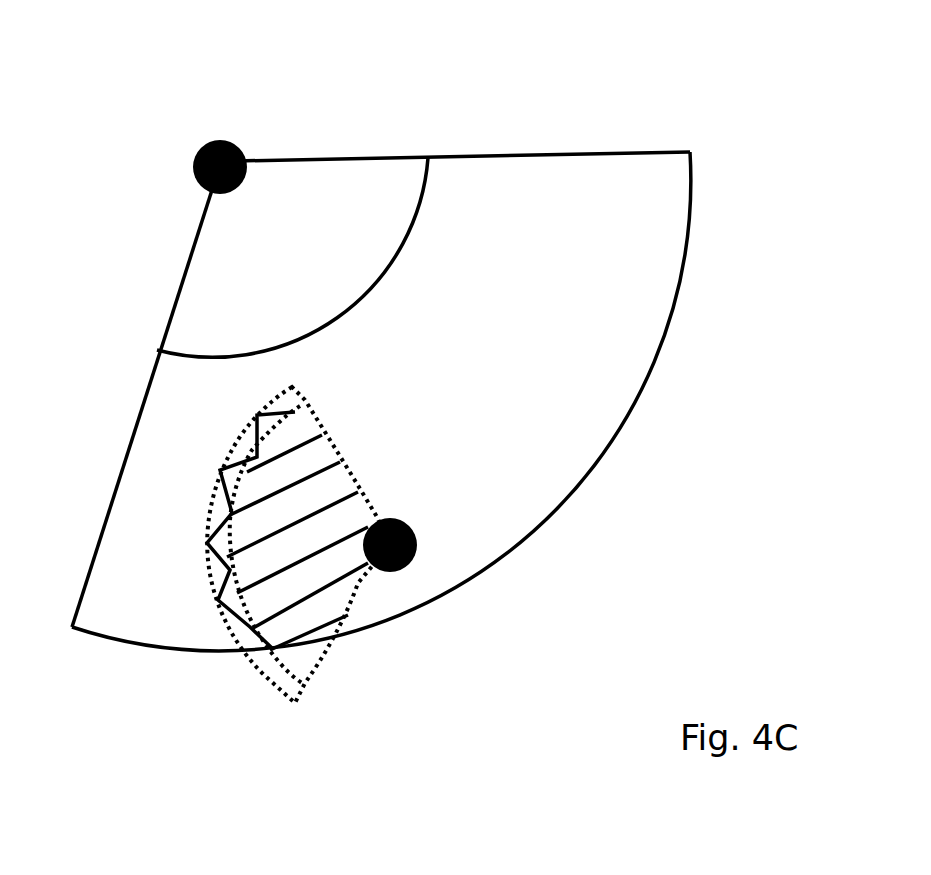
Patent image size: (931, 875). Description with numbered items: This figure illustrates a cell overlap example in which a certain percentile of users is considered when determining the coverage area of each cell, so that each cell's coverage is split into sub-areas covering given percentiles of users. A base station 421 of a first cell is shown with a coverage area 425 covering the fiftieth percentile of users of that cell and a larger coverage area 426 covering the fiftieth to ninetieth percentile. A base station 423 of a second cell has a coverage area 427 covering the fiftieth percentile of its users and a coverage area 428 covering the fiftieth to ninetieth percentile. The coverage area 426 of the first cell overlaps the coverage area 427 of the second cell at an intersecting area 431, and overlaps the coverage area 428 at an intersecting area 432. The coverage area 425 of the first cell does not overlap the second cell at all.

The base station 421 is at (205, 140).
The base station 423 is at (415, 558).
The coverage area 425 is at (346, 185).
The coverage area 426 is at (561, 193).
The coverage area 427 is at (331, 664).
The coverage area 428 is at (301, 694).
The intersecting area 431 is at (256, 615).
The intersecting area 432 is at (211, 600).